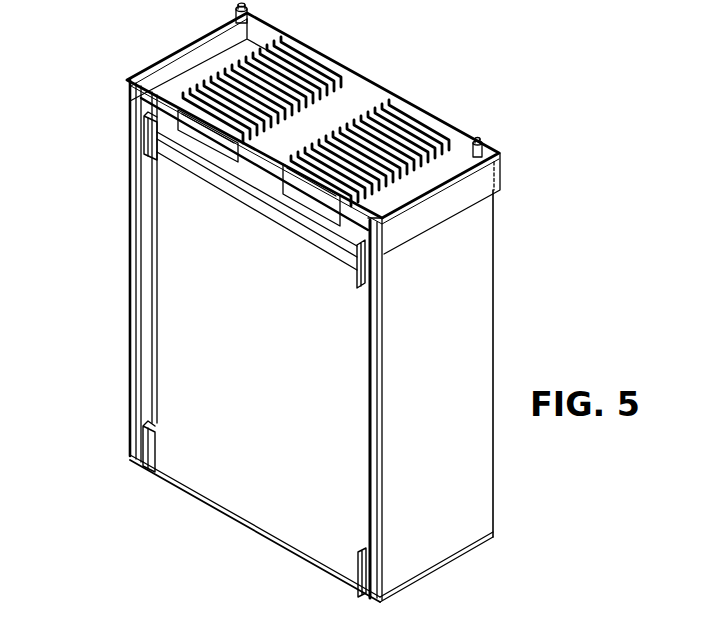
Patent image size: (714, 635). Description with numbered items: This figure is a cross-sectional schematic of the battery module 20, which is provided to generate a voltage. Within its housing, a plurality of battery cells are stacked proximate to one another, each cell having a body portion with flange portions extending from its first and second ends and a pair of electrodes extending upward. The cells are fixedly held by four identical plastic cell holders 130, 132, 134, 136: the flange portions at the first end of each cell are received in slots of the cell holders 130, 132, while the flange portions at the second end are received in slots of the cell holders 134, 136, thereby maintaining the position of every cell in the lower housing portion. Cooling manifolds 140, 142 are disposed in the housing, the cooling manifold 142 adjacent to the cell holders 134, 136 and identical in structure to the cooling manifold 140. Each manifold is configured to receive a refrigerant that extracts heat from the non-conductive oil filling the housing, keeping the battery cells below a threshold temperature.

The battery module 20 is at (404, 83).
The cell holder 130 is at (362, 583).
The cell holder 132 is at (365, 262).
The cell holder 134 is at (150, 472).
The cell holder 136 is at (144, 132).
The cooling manifold 140 is at (470, 324).
The cooling manifold 142 is at (138, 340).